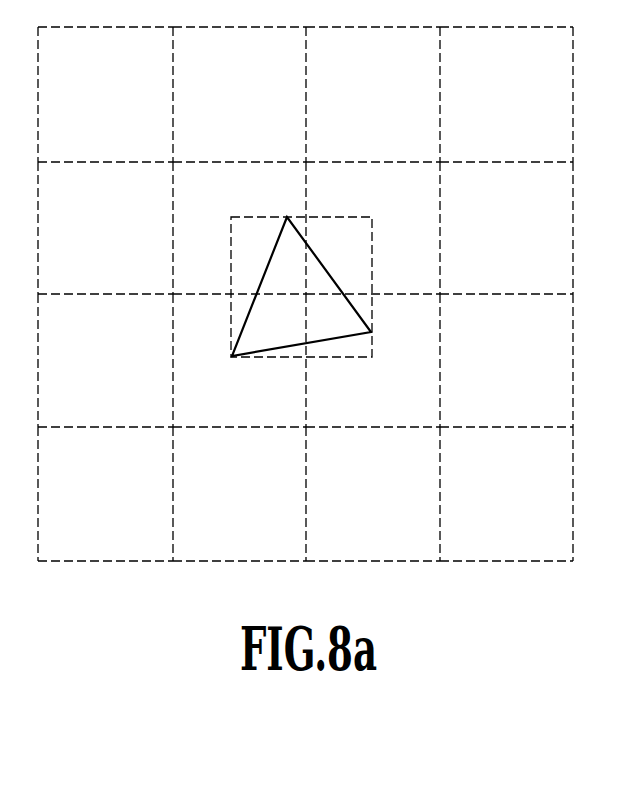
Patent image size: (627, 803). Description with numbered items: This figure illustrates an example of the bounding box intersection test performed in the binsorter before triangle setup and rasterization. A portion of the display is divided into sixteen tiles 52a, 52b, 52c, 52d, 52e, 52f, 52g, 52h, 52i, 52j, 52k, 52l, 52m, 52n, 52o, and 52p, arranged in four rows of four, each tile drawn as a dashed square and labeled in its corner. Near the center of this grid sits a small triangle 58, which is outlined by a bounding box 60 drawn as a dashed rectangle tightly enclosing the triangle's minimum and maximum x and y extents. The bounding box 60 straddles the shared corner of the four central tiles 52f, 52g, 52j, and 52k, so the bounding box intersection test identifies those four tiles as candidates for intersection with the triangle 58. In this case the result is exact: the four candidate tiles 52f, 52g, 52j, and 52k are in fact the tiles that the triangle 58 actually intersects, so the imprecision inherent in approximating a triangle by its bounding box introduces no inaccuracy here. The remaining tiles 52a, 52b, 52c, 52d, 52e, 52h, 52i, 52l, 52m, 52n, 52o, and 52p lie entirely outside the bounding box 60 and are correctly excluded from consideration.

The tile 52a is at (100, 64).
The tile 52b is at (234, 64).
The tile 52c is at (428, 64).
The tile 52d is at (560, 64).
The tile 52e is at (100, 198).
The tile 52f is at (234, 198).
The tile 52g is at (428, 198).
The tile 52h is at (560, 198).
The tile 52i is at (100, 412).
The tile 52j is at (234, 412).
The tile 52k is at (428, 412).
The tile 52l is at (560, 412).
The tile 52m is at (100, 547).
The tile 52n is at (234, 547).
The tile 52o is at (428, 547).
The tile 52p is at (560, 547).
The small triangle 58 is at (313, 322).
The bounding box 60 is at (372, 243).